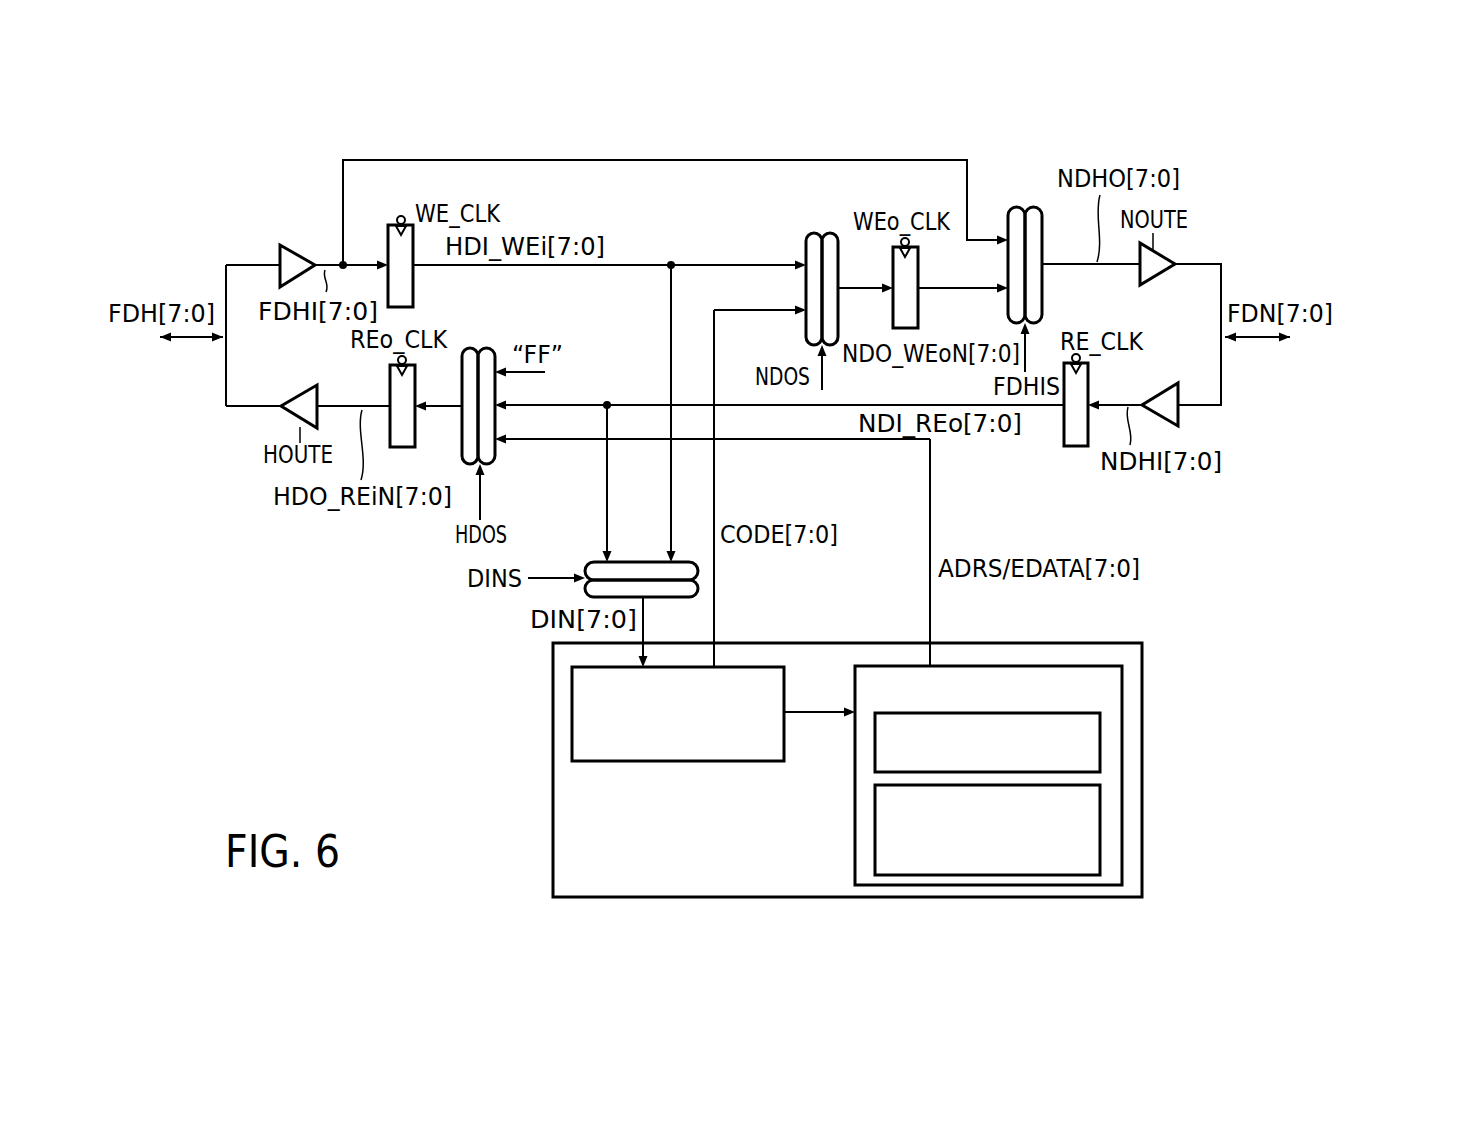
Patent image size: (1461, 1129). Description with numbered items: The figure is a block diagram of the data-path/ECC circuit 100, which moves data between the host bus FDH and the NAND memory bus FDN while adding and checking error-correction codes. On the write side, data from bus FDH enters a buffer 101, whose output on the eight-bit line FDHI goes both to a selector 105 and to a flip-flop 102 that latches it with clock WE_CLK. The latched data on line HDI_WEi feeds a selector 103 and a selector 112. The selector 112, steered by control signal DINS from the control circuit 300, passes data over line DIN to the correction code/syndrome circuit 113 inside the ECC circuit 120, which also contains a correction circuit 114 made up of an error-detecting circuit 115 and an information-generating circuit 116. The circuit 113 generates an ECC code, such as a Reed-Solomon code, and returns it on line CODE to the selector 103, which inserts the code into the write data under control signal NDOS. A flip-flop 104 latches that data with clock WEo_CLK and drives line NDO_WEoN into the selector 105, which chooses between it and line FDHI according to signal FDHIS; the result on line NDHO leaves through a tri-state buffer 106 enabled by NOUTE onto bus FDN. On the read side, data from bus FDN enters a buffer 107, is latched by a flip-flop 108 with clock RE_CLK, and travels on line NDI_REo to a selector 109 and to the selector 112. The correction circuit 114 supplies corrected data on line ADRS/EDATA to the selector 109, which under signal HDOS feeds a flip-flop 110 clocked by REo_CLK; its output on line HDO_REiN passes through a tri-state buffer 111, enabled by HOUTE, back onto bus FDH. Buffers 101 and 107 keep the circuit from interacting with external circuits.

The data-path/ECC circuit 100 is at (640, 143).
The buffer 101 is at (294, 245).
The flip-flop 102 is at (381, 224).
The selector 103 is at (815, 230).
The flip-flop 104 is at (920, 267).
The selector 105 is at (1030, 205).
The tri-state buffer 106 is at (1170, 255).
The buffer 107 is at (1178, 422).
The flip-flop 108 is at (1072, 448).
The selector 109 is at (496, 455).
The flip-flop 110 is at (416, 425).
The tri-state buffer 111 is at (316, 396).
The selector 112 is at (590, 560).
The correction code/syndrome circuit 113 is at (572, 712).
The correction circuit 114 is at (1122, 696).
The error-detecting circuit 115 is at (1100, 738).
The information-generating circuit 116 is at (1100, 820).
The ECC circuit 120 is at (1145, 872).
The control circuit 300 is at (1123, 765).